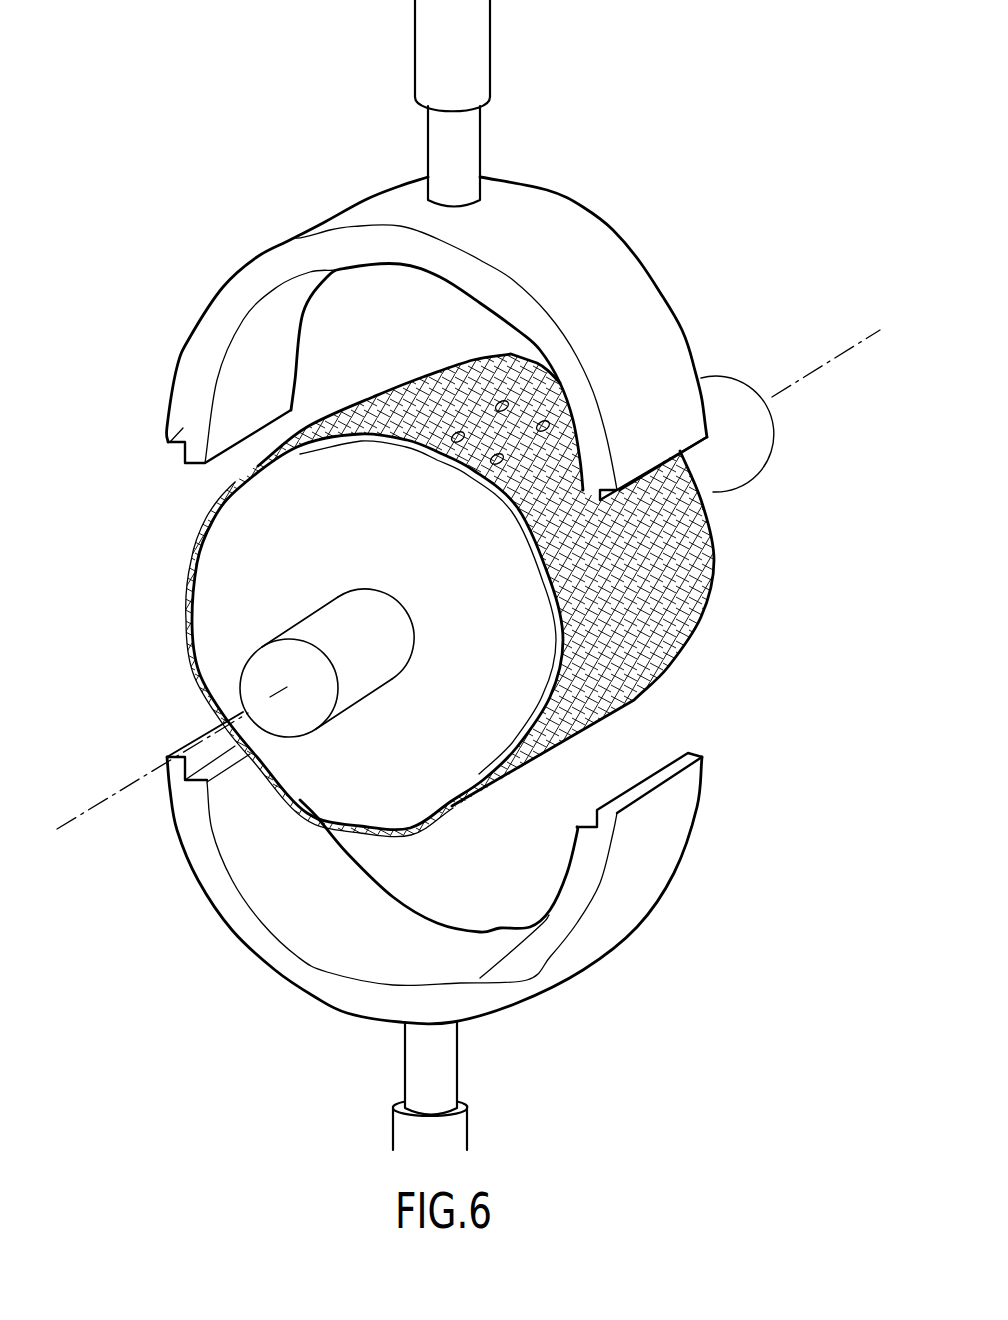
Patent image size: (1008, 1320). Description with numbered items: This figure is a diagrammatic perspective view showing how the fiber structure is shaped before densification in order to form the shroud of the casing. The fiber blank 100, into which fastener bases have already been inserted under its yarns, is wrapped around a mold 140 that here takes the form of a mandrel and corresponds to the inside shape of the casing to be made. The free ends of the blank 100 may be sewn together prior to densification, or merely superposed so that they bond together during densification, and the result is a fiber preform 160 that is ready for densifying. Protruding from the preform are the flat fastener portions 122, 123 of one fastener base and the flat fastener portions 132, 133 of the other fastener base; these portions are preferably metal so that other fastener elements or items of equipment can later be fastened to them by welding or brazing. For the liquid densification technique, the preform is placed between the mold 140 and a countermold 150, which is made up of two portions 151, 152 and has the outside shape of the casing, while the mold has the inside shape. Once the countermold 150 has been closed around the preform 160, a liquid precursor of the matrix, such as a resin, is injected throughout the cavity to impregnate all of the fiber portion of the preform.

The fiber blank 100 is at (495, 588).
The fiber preform 160 is at (495, 580).
The mold 140 is at (323, 792).
The countermold 150 is at (379, 600).
The countermold portion 151 is at (177, 440).
The countermold portion 152 is at (167, 755).
The fastener portion 122 is at (456, 430).
The fastener portion 123 is at (498, 402).
The fastener portion 132 is at (495, 463).
The fastener portion 133 is at (575, 428).